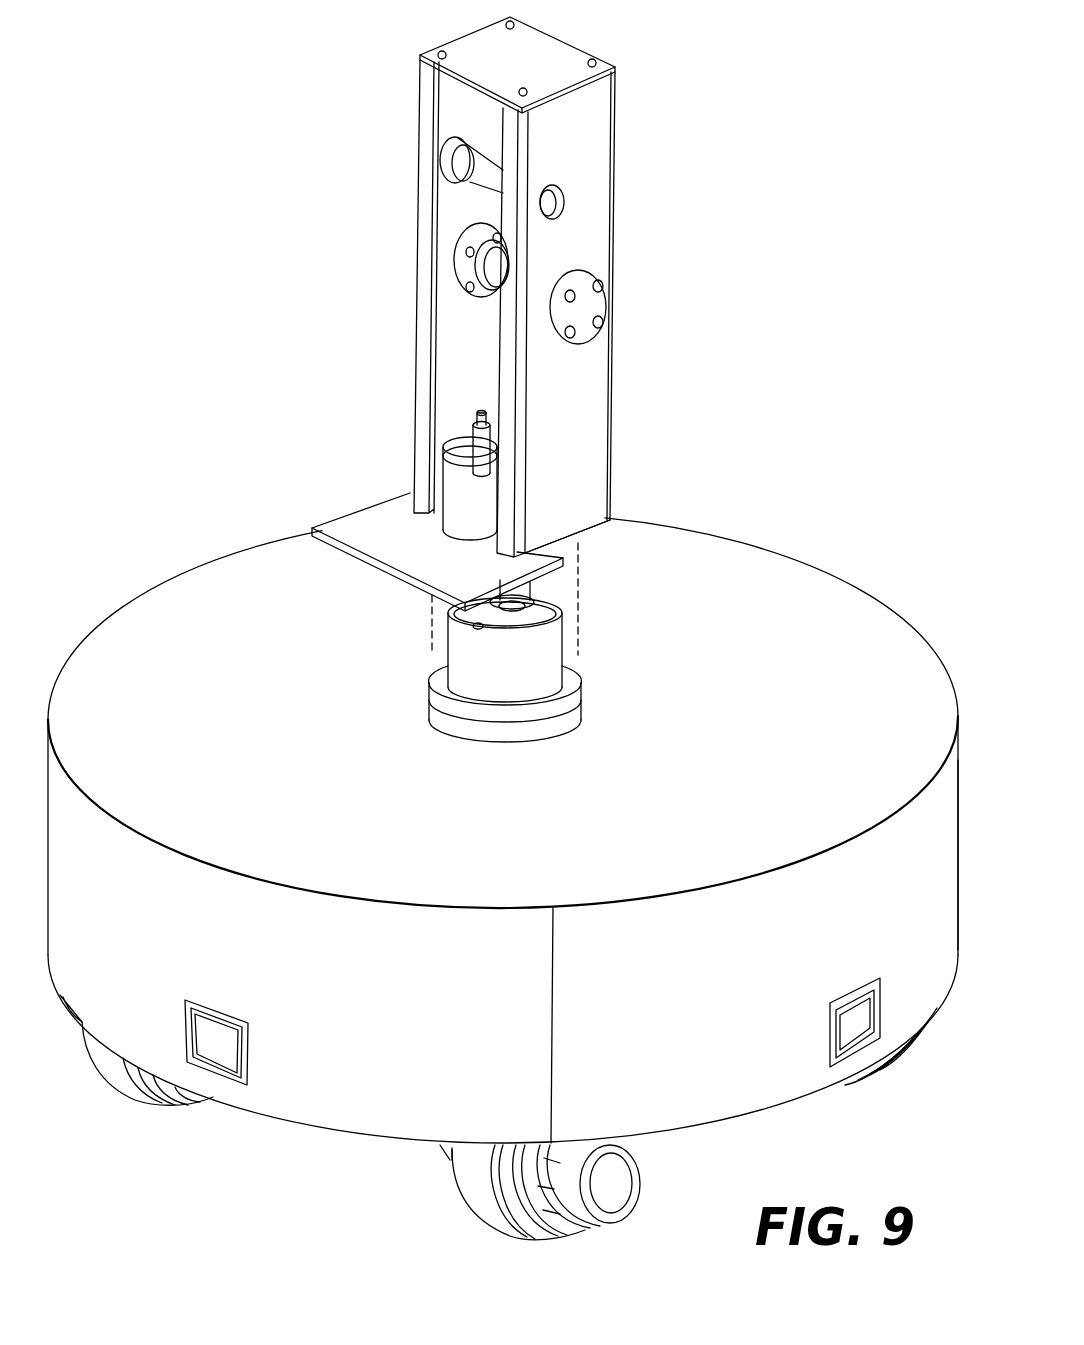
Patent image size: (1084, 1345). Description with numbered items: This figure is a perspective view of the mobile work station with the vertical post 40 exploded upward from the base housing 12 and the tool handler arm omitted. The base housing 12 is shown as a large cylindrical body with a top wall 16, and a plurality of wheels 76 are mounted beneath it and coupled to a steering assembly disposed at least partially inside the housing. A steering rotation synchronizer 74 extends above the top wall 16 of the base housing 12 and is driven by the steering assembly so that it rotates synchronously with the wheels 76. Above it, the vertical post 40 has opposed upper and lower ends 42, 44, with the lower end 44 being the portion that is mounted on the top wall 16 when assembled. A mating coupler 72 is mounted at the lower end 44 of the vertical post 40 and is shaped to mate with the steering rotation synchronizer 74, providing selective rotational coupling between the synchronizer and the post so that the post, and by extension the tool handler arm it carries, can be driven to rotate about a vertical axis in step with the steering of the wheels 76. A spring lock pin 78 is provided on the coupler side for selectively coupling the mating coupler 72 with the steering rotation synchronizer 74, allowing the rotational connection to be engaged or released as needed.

The base housing 12 is at (941, 880).
The top wall 16 is at (792, 582).
The vertical post 40 is at (590, 416).
The upper end 42 is at (540, 52).
The lower end 44 is at (590, 508).
The mating coupler 72 is at (465, 497).
The steering rotation synchronizer 74 is at (535, 662).
The wheels 76 is at (120, 1078).
The spring lock pin 78 is at (478, 455).